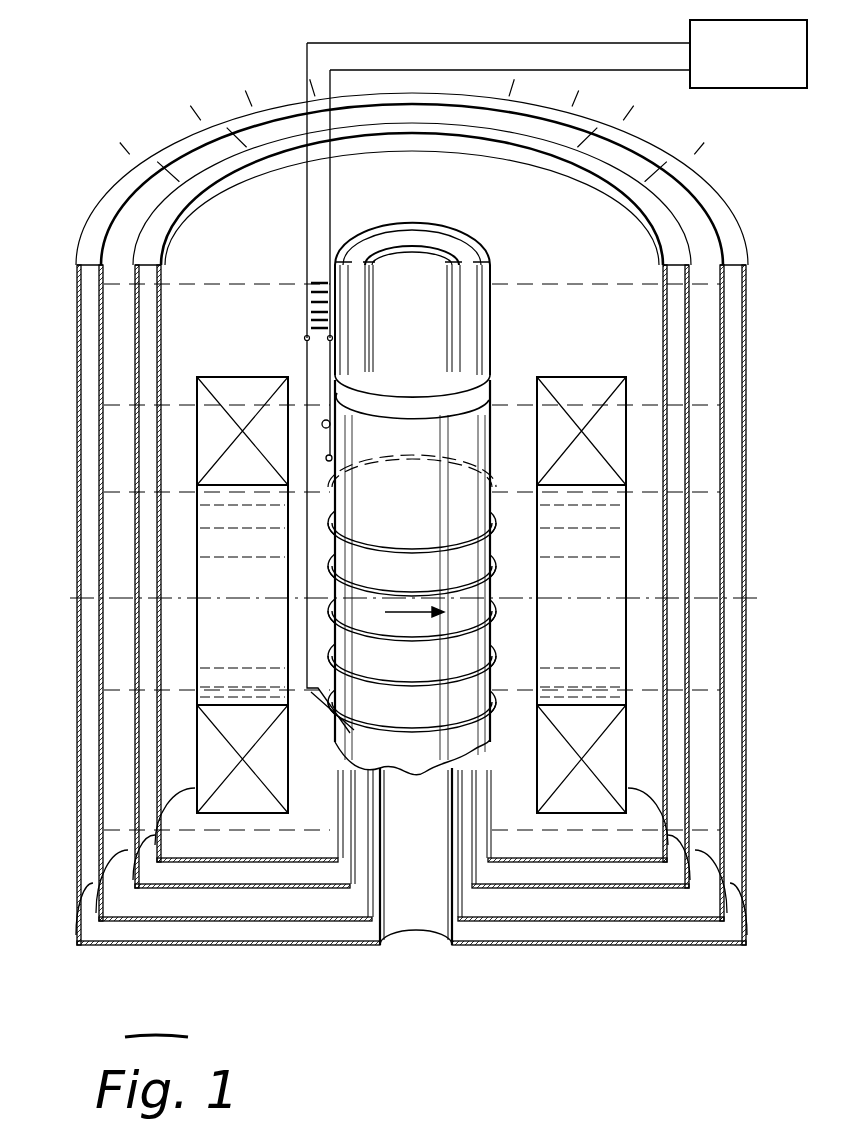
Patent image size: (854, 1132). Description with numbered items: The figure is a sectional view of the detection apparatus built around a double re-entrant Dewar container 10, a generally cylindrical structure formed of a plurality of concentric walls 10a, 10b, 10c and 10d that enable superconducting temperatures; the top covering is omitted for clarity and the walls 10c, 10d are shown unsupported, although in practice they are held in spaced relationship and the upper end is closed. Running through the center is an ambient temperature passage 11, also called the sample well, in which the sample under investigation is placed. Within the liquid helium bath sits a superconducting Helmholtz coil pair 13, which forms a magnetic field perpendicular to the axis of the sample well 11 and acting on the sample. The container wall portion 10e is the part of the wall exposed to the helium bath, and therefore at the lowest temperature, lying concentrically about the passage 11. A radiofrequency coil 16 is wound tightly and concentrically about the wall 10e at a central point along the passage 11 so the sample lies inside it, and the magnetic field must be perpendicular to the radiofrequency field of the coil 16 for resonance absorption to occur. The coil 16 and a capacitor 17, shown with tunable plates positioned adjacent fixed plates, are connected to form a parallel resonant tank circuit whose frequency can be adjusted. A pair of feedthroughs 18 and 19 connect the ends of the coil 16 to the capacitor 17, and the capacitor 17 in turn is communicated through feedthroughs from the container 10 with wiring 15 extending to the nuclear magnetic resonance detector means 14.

The double reentrant Dewar container 10 is at (386, 634).
The concentric wall 10a is at (78, 668).
The concentric wall 10b is at (100, 626).
The concentric wall 10c is at (136, 586).
The concentric wall 10d is at (160, 547).
The container wall portion 10e is at (420, 772).
The central ambient temperature passage 11 is at (420, 948).
The superconducting Helmholtz Coil Pair 13 is at (205, 752).
The nuclear magnetic resonance detector means 14 is at (750, 88).
The wiring 15 is at (564, 71).
The radiofrequency coil 16 is at (384, 554).
The capacitor 17 is at (309, 338).
The feedthrough 18 is at (318, 545).
The feedthrough 19 is at (332, 432).